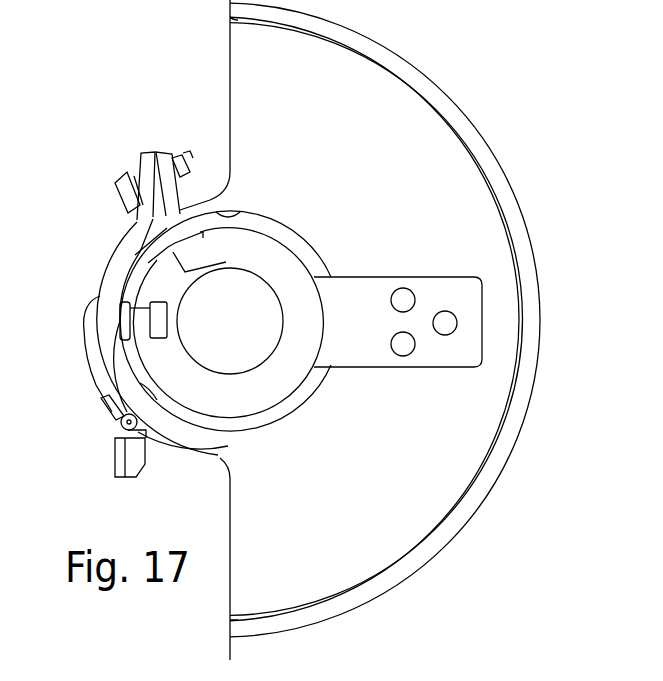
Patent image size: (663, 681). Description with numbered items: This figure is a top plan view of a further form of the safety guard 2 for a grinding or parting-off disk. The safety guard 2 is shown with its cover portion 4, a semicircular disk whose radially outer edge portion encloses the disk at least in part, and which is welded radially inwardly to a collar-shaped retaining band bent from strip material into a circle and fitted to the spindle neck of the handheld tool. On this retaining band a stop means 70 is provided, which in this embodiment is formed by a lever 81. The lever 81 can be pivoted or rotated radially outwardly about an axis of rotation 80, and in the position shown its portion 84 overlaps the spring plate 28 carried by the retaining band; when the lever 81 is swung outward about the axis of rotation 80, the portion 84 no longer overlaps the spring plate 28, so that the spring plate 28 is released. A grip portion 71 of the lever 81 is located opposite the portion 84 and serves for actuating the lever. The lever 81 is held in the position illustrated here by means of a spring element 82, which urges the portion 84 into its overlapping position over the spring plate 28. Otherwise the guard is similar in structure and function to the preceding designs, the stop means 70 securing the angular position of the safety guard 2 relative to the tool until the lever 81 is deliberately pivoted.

The safety guard 2 is at (453, 179).
The cover portion 4 is at (420, 510).
The spring plate 28 is at (257, 242).
The stop means 70 is at (90, 314).
The lever 81 is at (90, 357).
The spring element 82 is at (100, 400).
The axis of rotation 80 is at (119, 424).
The grip portion 71 is at (115, 458).
The portion of the lever 84 is at (130, 328).